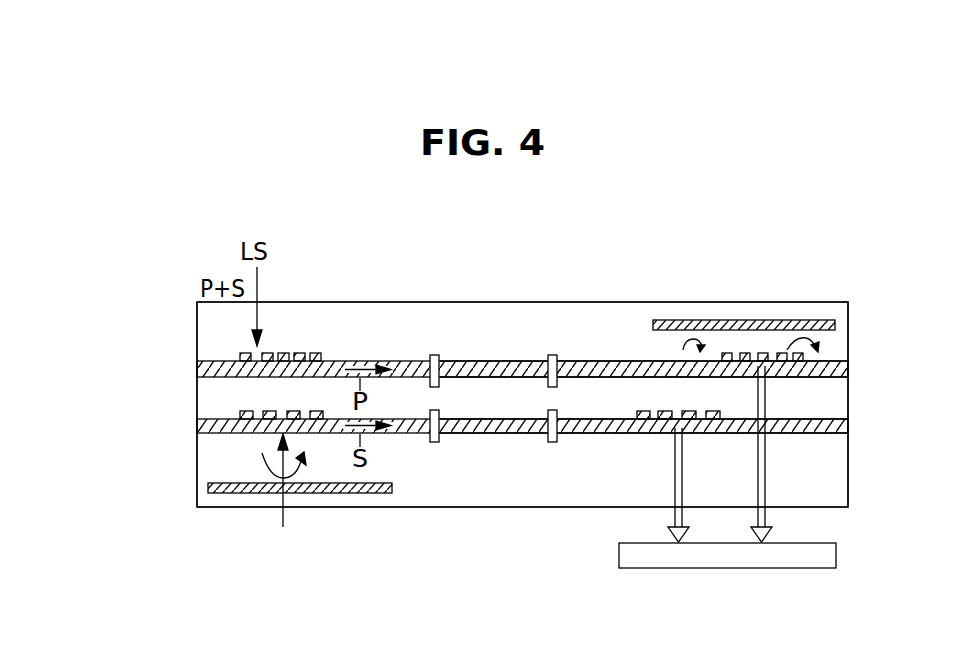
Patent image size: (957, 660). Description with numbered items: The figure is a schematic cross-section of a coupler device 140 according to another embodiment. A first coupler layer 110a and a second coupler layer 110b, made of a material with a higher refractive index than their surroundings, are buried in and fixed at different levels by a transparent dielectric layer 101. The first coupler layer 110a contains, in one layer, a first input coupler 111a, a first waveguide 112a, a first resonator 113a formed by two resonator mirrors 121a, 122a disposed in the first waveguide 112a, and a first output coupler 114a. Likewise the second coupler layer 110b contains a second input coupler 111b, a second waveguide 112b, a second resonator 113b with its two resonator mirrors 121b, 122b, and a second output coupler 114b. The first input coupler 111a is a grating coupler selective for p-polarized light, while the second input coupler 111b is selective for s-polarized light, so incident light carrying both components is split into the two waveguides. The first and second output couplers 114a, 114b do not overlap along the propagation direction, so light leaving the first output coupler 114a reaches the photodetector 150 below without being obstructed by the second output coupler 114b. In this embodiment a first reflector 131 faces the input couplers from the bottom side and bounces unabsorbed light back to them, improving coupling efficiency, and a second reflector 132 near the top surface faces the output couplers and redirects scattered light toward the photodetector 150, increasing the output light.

The transparent dielectric layer 101 is at (205, 398).
The coupler device 140 is at (413, 629).
The first coupler layer 110a is at (174, 365).
The second coupler layer 110b is at (174, 425).
The first input coupler 111a is at (305, 325).
The second input coupler 111b is at (281, 486).
The first waveguide 112a is at (616, 367).
The second waveguide 112b is at (607, 428).
The first resonator 113a is at (496, 366).
The second resonator 113b is at (489, 428).
The first output coupler 114a is at (754, 325).
The second output coupler 114b is at (668, 388).
The resonator mirror 121a is at (434, 354).
The resonator mirror 121b is at (434, 443).
The resonator mirror 122a is at (553, 354).
The resonator mirror 122b is at (552, 443).
The first reflector 131 is at (223, 494).
The second reflector 132 is at (822, 320).
The photodetector 150 is at (735, 568).